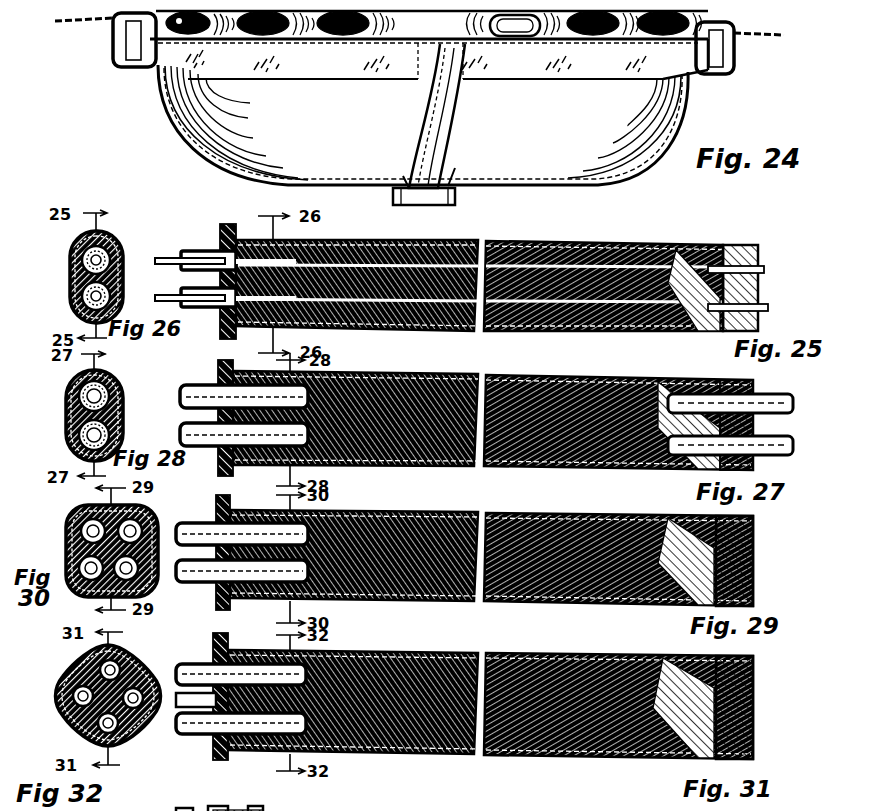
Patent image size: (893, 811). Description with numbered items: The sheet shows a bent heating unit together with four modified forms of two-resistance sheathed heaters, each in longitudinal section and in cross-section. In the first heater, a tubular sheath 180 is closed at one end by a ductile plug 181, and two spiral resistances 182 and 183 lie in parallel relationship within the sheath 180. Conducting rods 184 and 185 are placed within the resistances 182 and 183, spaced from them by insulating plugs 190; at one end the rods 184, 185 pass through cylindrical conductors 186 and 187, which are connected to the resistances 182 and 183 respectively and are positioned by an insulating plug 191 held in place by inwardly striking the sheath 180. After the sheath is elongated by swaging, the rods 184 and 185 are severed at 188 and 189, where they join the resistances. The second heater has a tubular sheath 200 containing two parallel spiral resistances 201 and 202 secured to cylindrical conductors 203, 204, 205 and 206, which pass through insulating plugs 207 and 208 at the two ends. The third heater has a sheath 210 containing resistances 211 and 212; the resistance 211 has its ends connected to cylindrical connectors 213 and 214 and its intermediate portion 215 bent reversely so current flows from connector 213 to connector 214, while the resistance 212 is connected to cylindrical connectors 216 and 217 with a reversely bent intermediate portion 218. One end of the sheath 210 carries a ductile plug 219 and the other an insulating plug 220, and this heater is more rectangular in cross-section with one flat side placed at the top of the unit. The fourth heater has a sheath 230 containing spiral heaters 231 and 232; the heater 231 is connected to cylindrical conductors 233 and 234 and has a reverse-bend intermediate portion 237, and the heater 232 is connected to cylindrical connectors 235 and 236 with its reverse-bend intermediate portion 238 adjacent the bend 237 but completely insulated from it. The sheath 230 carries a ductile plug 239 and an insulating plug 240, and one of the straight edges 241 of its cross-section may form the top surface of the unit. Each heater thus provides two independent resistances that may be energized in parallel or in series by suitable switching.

In FIG. 24, the tubular sheath 180 is at (450, 113).
In FIG. 25, the tubular sheath 180 is at (598, 245).
In FIG. 25, the ductile plug 181 is at (750, 279).
In FIG. 25, the spiral resistance 182 is at (532, 245).
In FIG. 25, the spiral resistance 183 is at (530, 306).
In FIG. 26, the conducting rod 184 is at (75, 251).
In FIG. 25, the conducting rod 184 is at (152, 250).
In FIG. 26, the conducting rod 185 is at (75, 290).
In FIG. 25, the conducting rod 185 is at (160, 282).
In FIG. 25, the cylindrical conductor 186 is at (192, 242).
In FIG. 25, the cylindrical conductor 187 is at (187, 301).
In FIG. 25, the severing point of rod 188 is at (705, 246).
In FIG. 25, the severing point of rod 189 is at (690, 315).
In FIG. 25, the insulating plug 190 is at (462, 248).
In FIG. 25, the insulating plug 191 is at (227, 224).
In FIG. 27, the tubular sheath 200 is at (595, 380).
In FIG. 27, the spiral resistance 201 is at (392, 380).
In FIG. 27, the spiral resistance 202 is at (372, 450).
In FIG. 28, the cylindrical conductor 203 is at (71, 388).
In FIG. 27, the cylindrical conductor 203 is at (182, 377).
In FIG. 28, the cylindrical conductor 204 is at (71, 428).
In FIG. 27, the cylindrical conductor 204 is at (190, 440).
In FIG. 27, the cylindrical conductor 205 is at (765, 388).
In FIG. 27, the cylindrical conductor 206 is at (780, 438).
In FIG. 27, the insulating plug 207 is at (247, 412).
In FIG. 27, the insulating plug 208 is at (726, 376).
In FIG. 29, the sheath 210 is at (526, 512).
In FIG. 29, the resistance 211 is at (590, 515).
In FIG. 29, the resistance 212 is at (572, 586).
In FIG. 30, the cylindrical connector 213 is at (62, 518).
In FIG. 29, the cylindrical connector 213 is at (183, 515).
In FIG. 30, the cylindrical connector 214 is at (140, 512).
In FIG. 30, the intermediate portion of resistance 215 is at (72, 507).
In FIG. 29, the intermediate portion of resistance 215 is at (692, 515).
In FIG. 30, the cylindrical connector 216 is at (68, 583).
In FIG. 29, the cylindrical connector 216 is at (188, 575).
In FIG. 30, the cylindrical connector 217 is at (132, 553).
In FIG. 29, the intermediate portion of resistance 218 is at (680, 572).
In FIG. 29, the ductile plug 219 is at (735, 552).
In FIG. 29, the insulating plug 220 is at (210, 600).
In FIG. 31, the sheath 230 is at (525, 648).
In FIG. 32, the spiral heater 231 is at (110, 651).
In FIG. 31, the spiral heater 231 is at (358, 650).
In FIG. 32, the spiral heater 232 is at (130, 678).
In FIG. 32, the cylindrical conductor 233 is at (58, 700).
In FIG. 31, the cylindrical conductor 233 is at (188, 656).
In FIG. 31, the cylindrical conductor 234 is at (185, 700).
In FIG. 32, the cylindrical connector 235 is at (62, 685).
In FIG. 32, the cylindrical connector 236 is at (128, 720).
In FIG. 31, the intermediate portion of heater 237 is at (690, 660).
In FIG. 31, the intermediate portion of heater 238 is at (670, 700).
In FIG. 31, the ductile plug 239 is at (735, 690).
In FIG. 31, the insulating plug 240 is at (210, 754).
In FIG. 32, the straight edge 241 is at (70, 655).